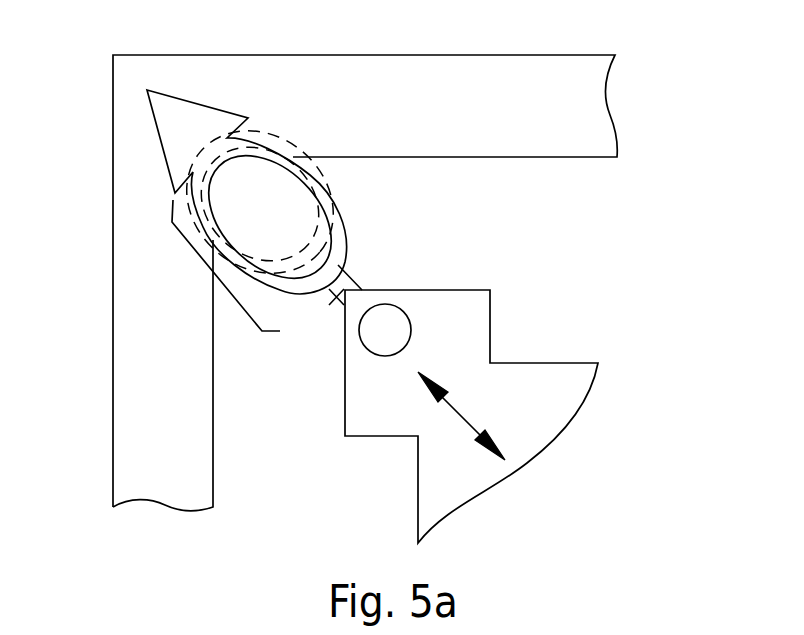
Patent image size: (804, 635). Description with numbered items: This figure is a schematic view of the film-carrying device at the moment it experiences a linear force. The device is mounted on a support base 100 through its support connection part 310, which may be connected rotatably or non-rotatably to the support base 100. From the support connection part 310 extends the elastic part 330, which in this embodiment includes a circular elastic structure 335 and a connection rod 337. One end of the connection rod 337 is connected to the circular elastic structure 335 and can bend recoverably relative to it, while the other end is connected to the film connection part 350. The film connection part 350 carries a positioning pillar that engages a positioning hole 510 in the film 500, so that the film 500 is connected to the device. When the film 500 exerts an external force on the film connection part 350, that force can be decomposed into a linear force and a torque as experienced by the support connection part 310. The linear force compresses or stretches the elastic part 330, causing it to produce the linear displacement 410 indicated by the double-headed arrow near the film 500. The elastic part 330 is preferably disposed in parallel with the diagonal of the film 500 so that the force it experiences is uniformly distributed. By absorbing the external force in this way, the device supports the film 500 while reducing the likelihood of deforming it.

The support base 100 is at (438, 85).
The support connection part 310 is at (178, 128).
The circular elastic structure 335 is at (335, 232).
The elastic part 330 is at (213, 262).
The connection rod 337 is at (329, 304).
The film connection part 350 is at (383, 328).
The positioning hole 510 is at (425, 338).
The film 500 is at (528, 383).
The linear displacement 410 is at (463, 417).